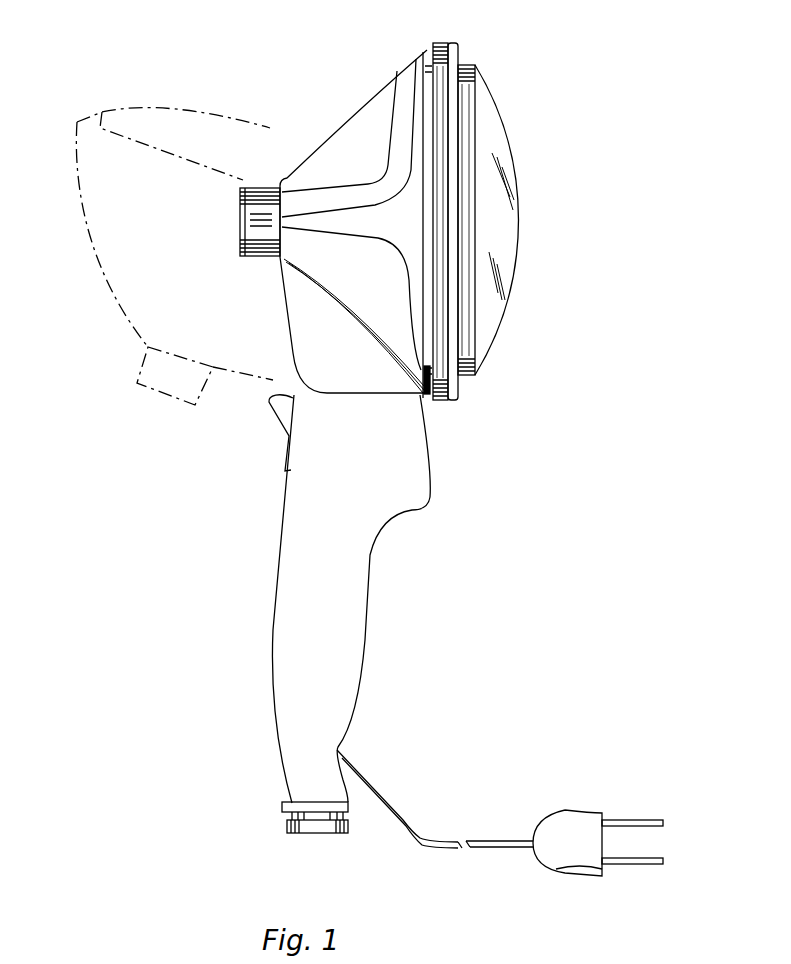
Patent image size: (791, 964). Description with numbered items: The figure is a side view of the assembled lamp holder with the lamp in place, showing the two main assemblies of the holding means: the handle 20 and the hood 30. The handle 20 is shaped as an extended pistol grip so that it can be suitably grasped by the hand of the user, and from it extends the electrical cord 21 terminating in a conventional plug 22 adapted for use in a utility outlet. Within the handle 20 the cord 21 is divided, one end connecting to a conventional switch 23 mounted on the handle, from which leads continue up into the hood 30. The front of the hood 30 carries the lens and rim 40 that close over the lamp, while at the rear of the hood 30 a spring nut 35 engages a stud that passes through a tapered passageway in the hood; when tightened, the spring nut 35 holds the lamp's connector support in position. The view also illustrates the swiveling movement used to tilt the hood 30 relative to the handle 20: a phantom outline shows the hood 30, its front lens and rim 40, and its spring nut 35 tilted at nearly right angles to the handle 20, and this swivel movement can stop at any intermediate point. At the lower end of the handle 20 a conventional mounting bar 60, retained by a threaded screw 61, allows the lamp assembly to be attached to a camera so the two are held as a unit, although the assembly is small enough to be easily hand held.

The handle 20 is at (288, 570).
The electrical cord 21 is at (390, 828).
The plug 22 is at (553, 826).
The switch 23 is at (273, 410).
The hood 30 is at (318, 156).
The spring nut 35 is at (240, 198).
The lens and bezel assembly 40 is at (501, 150).
The mounting bar 60 is at (282, 806).
The threaded screw 61 is at (287, 829).